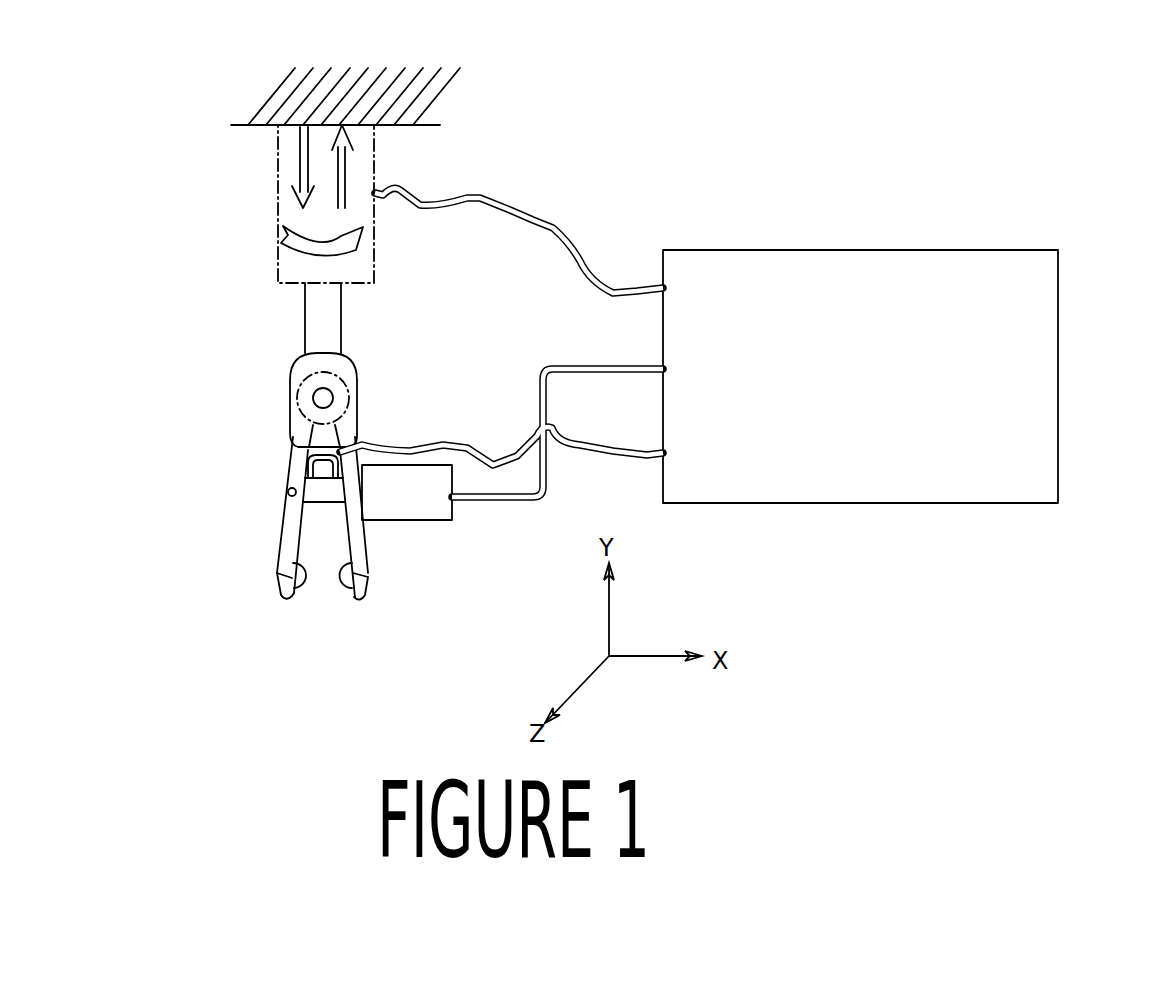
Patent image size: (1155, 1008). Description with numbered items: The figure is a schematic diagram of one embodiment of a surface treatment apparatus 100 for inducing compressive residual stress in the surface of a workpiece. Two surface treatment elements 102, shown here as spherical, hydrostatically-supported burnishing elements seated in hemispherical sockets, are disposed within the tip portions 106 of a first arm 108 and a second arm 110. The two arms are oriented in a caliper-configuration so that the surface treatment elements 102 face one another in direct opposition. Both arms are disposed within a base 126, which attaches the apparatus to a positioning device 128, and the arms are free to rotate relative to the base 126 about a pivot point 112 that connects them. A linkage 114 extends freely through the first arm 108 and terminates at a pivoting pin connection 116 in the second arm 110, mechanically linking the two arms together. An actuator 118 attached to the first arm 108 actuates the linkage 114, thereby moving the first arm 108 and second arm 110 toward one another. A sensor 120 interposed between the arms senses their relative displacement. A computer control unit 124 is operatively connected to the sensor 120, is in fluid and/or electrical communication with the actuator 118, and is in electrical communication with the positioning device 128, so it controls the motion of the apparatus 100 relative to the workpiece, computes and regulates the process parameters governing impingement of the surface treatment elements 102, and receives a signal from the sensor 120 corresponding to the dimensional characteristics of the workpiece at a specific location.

The apparatus 100 is at (510, 158).
The surface treatment elements 102 is at (340, 593).
The tip portions 106 is at (277, 580).
The first arm 108 is at (357, 553).
The second arm 110 is at (287, 543).
The pivot point 112 is at (323, 398).
The linkage 114 is at (317, 488).
The pivoting pin connection 116 is at (288, 492).
The actuator 118 is at (407, 510).
The sensor 120 is at (317, 452).
The computer control unit 124 is at (860, 414).
The base 126 is at (317, 315).
The positioning device 128 is at (290, 215).